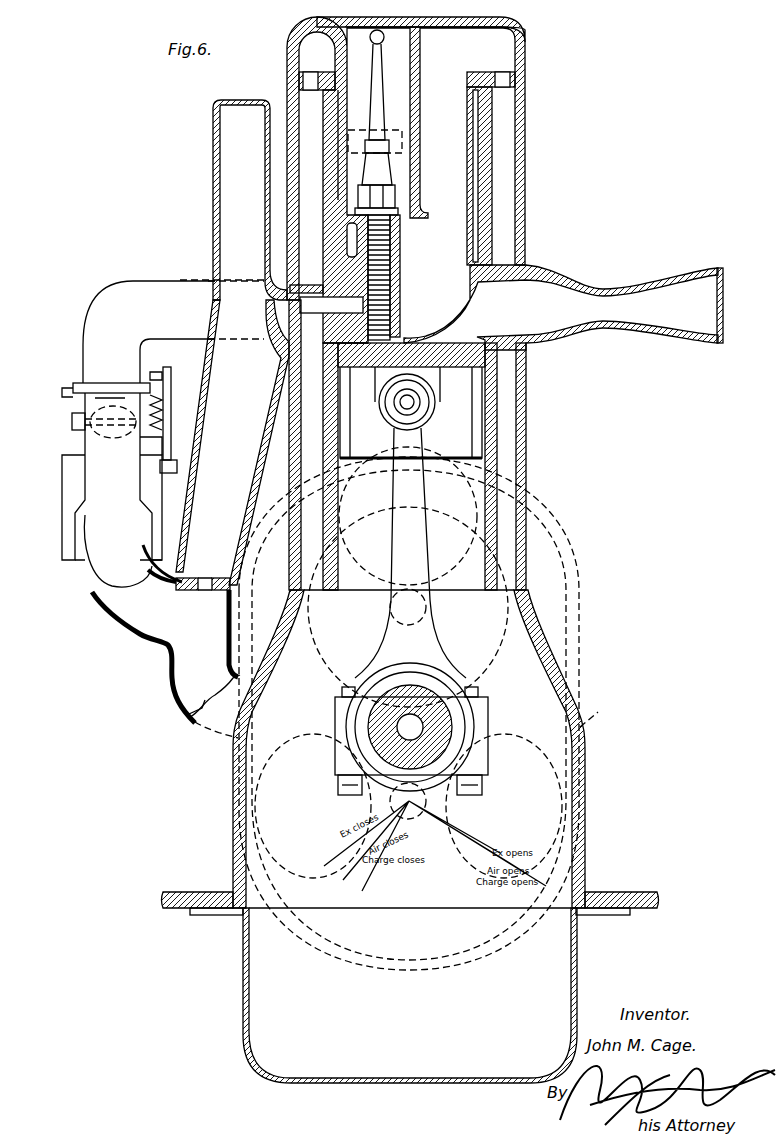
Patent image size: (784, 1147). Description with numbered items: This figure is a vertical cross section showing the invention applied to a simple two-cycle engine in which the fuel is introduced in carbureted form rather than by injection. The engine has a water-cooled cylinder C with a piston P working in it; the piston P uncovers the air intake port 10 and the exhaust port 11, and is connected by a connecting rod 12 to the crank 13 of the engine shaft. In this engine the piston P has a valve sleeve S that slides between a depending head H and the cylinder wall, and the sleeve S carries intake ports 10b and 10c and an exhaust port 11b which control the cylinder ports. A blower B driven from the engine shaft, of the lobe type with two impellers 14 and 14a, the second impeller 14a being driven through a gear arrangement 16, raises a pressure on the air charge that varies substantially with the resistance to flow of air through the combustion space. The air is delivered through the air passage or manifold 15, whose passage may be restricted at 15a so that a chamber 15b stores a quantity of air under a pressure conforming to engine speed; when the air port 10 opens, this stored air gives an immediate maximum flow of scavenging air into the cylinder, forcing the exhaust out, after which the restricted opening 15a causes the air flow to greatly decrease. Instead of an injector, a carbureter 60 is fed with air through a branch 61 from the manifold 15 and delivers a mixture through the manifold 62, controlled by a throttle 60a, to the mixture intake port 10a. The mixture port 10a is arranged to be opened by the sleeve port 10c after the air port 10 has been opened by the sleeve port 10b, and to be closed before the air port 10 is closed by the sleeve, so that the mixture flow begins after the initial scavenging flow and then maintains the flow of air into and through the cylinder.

The intake port 10 is at (274, 435).
The mixture intake port 10a is at (400, 274).
The sleeve intake port 10b is at (337, 143).
The sleeve intake port 10c is at (390, 128).
The exhaust port 11 is at (513, 322).
The sleeve exhaust port 11b is at (483, 153).
The connecting rod 12 is at (410, 553).
The crank 13 is at (490, 679).
The impeller 14 is at (572, 763).
The impeller 14a is at (462, 656).
The air manifold 15 is at (166, 665).
The restriction 15a is at (207, 608).
The chamber 15b is at (232, 442).
The gear arrangement 16 is at (507, 605).
The carbureter 60 is at (58, 530).
The throttle 60a is at (100, 435).
The branch 61 is at (133, 565).
The manifold 62 is at (149, 332).
The blower B is at (591, 715).
The cylinder C is at (503, 201).
The depending head H is at (462, 214).
The piston P is at (455, 407).
The valve sleeve S is at (333, 222).